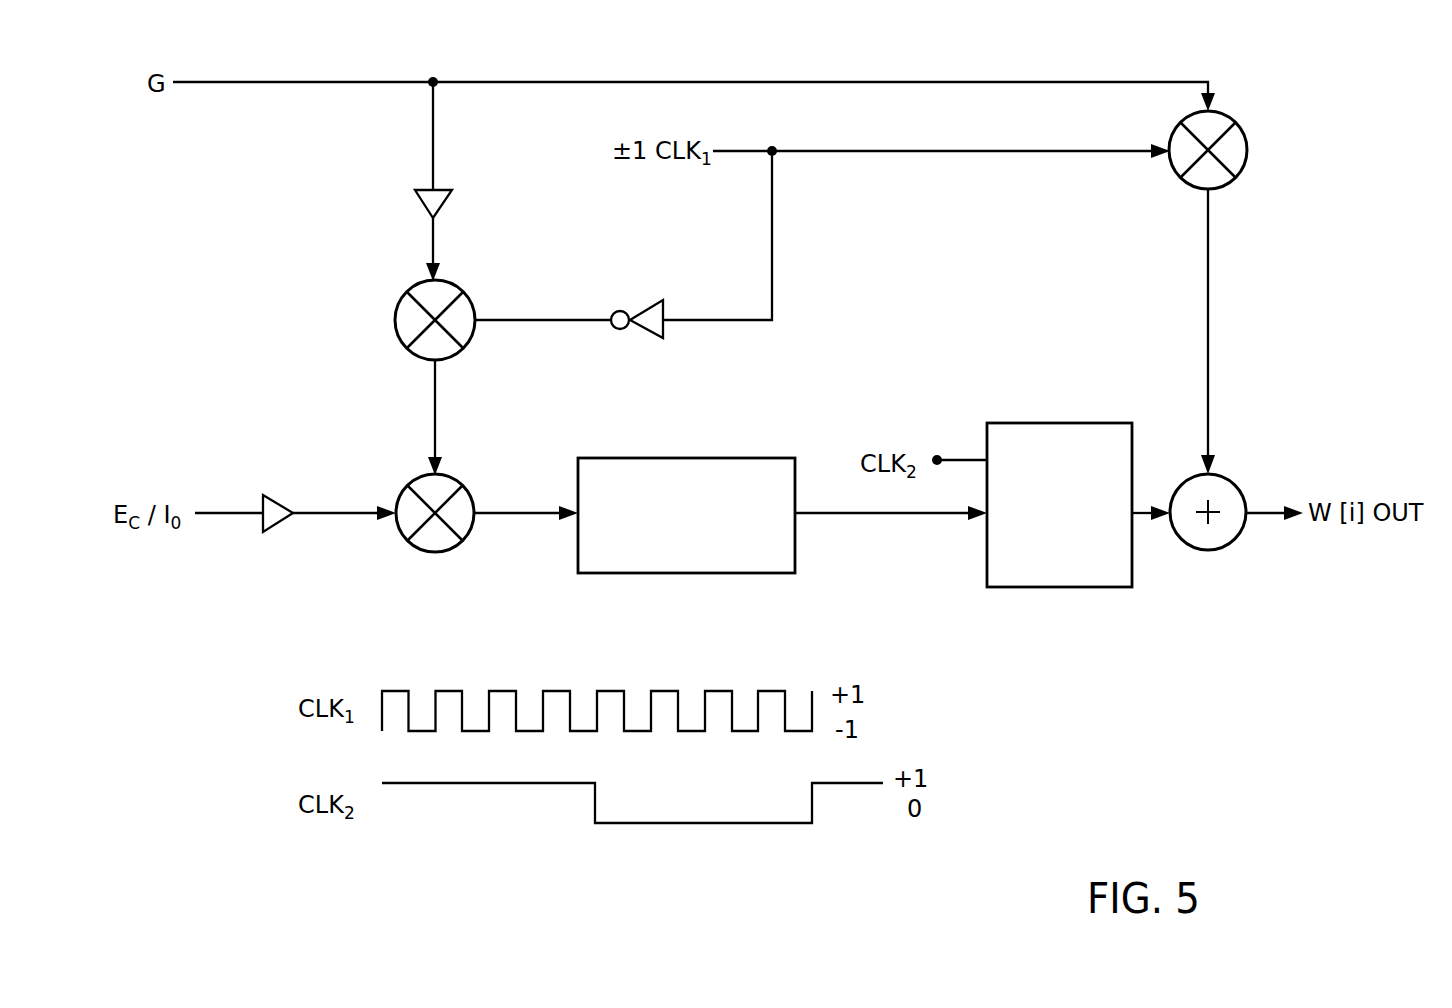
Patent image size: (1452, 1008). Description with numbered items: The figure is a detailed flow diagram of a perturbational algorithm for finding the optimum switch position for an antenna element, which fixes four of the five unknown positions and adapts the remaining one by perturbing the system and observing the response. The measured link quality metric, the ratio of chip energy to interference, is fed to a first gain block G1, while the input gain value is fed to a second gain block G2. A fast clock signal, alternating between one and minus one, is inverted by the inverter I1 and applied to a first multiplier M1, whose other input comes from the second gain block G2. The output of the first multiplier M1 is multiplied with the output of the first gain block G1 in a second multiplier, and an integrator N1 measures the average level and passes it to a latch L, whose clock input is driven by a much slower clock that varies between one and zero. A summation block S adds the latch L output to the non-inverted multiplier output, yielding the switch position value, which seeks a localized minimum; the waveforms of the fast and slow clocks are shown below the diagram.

The first gain block G1 is at (326, 492).
The second gain block G2 is at (414, 233).
The first multiplier M1 is at (457, 293).
The inverter I1 is at (623, 244).
The integrator N1 is at (782, 497).
The latch L is at (1078, 485).
The summation block S is at (1236, 497).